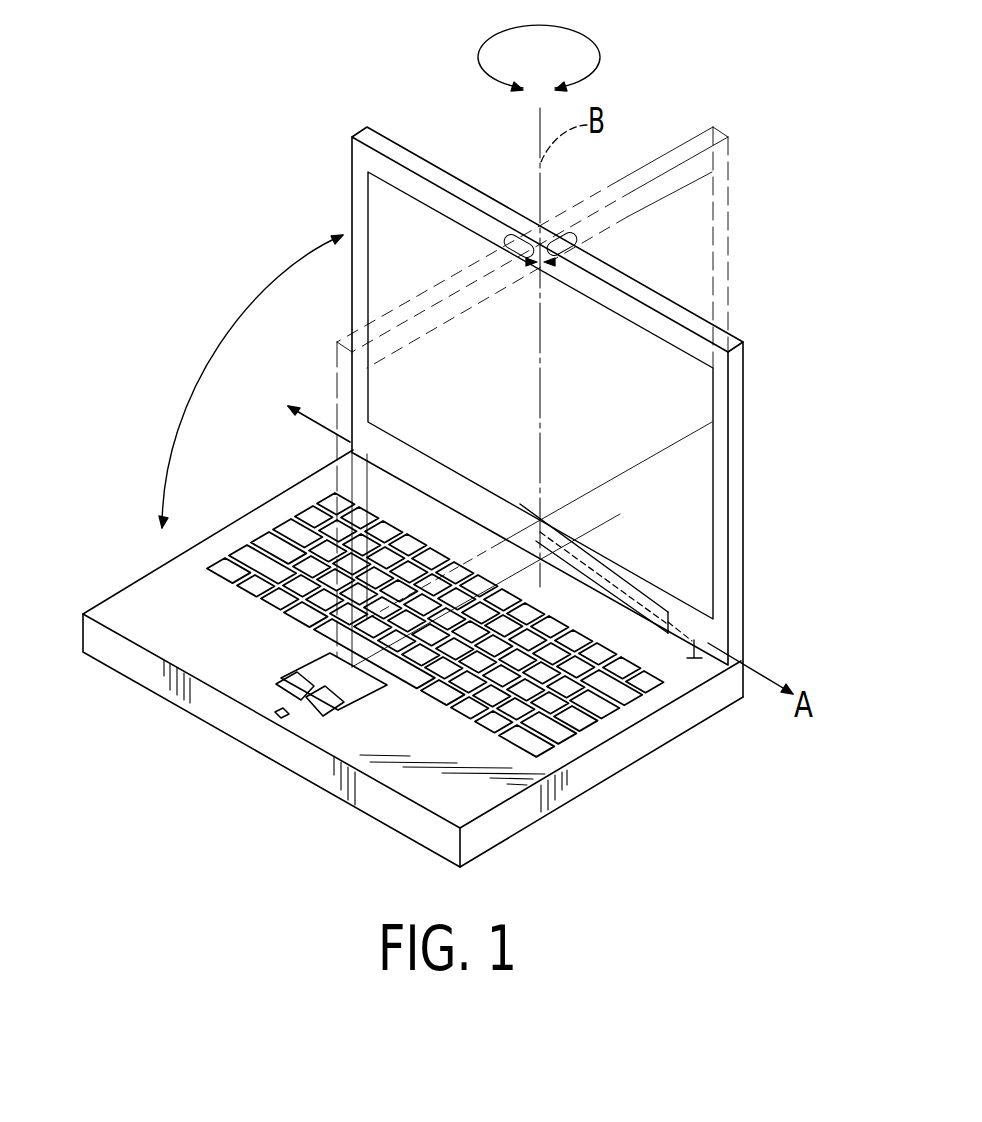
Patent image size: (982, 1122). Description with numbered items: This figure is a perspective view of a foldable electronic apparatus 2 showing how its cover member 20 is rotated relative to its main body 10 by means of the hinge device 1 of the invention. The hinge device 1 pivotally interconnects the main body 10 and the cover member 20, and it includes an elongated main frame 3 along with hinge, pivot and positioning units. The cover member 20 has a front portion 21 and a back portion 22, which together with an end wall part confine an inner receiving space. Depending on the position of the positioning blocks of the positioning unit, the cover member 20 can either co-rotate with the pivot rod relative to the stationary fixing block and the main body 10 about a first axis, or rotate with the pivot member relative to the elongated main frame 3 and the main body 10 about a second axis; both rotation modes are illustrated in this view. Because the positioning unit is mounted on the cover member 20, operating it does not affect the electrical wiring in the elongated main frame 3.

The hinge device 1 is at (597, 586).
The foldable electronic apparatus 2 is at (343, 202).
The elongated main frame 3 is at (668, 613).
The main body 10 is at (567, 750).
The cover member 20 is at (762, 506).
The front portion 21 is at (723, 428).
The back portion 22 is at (745, 372).